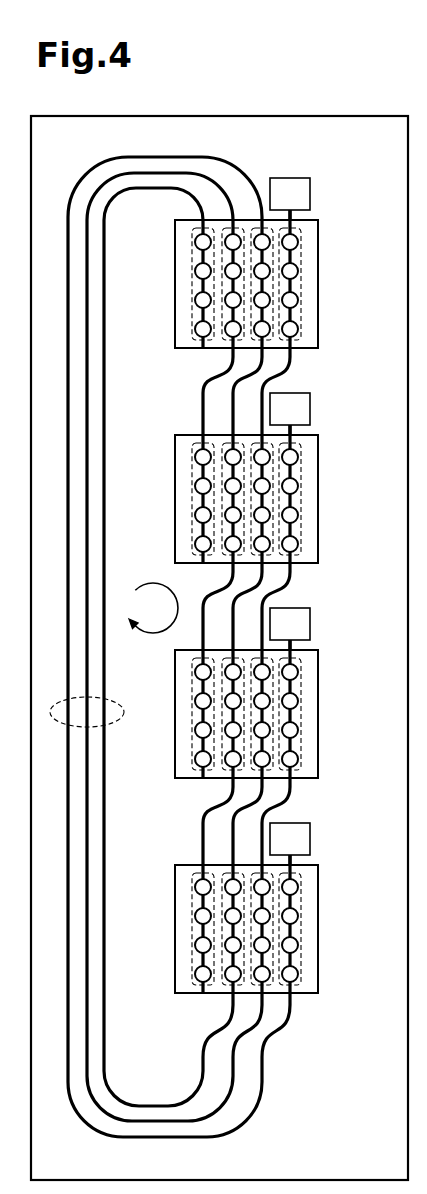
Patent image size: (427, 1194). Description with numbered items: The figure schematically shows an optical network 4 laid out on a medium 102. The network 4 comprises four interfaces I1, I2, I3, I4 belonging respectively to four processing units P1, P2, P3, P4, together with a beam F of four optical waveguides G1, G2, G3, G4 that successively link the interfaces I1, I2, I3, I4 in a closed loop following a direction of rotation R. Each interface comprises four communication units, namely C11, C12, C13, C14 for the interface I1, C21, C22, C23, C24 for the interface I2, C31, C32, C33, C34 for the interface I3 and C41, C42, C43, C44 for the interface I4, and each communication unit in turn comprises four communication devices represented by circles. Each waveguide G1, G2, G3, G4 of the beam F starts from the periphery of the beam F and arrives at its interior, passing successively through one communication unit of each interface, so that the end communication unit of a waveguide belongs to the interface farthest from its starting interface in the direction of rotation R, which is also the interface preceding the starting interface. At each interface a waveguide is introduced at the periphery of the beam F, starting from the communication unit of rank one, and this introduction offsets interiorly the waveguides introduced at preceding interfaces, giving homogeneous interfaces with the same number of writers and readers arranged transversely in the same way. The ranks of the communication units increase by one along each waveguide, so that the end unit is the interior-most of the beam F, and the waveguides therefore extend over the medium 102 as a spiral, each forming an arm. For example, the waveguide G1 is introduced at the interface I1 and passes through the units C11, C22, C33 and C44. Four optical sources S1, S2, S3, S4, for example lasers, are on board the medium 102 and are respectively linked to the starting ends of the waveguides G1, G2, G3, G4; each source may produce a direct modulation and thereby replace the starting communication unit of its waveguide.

The optical network 4 is at (249, 104).
The medium 102 is at (368, 1147).
The direction of rotation R is at (153, 608).
The beam F is at (124, 713).
The optical source S1 is at (276, 205).
The optical source S2 is at (276, 420).
The optical source S3 is at (276, 635).
The optical source S4 is at (276, 850).
The optical waveguide G1 is at (292, 219).
The optical waveguide G2 is at (292, 434).
The optical waveguide G3 is at (292, 649).
The optical waveguide G4 is at (292, 864).
The processing unit P1 is at (313, 231).
The processing unit P2 is at (313, 467).
The processing unit P3 is at (313, 681).
The processing unit P4 is at (313, 895).
The interface I1 is at (322, 286).
The interface I2 is at (322, 500).
The interface I3 is at (322, 715).
The interface I4 is at (322, 930).
The communication unit C11 is at (303, 252).
The communication unit C12 is at (270, 347).
The communication unit C13 is at (222, 348).
The communication unit C14 is at (192, 260).
The communication unit C21 is at (303, 478).
The communication unit C22 is at (266, 562).
The communication unit C23 is at (220, 536).
The communication unit C24 is at (192, 481).
The communication unit C31 is at (303, 693).
The communication unit C32 is at (266, 775).
The communication unit C33 is at (222, 775).
The communication unit C34 is at (192, 684).
The communication unit C41 is at (303, 908).
The communication unit C42 is at (270, 992).
The communication unit C43 is at (223, 990).
The communication unit C44 is at (192, 900).